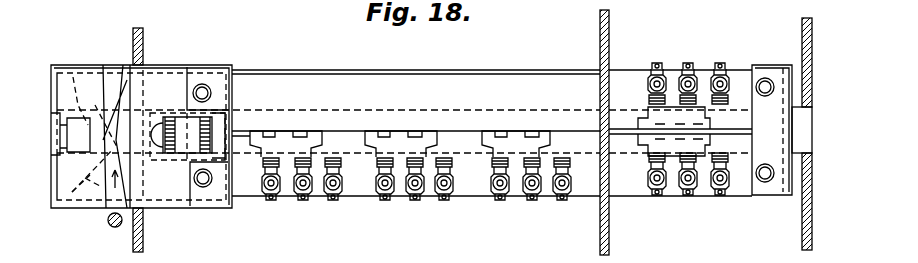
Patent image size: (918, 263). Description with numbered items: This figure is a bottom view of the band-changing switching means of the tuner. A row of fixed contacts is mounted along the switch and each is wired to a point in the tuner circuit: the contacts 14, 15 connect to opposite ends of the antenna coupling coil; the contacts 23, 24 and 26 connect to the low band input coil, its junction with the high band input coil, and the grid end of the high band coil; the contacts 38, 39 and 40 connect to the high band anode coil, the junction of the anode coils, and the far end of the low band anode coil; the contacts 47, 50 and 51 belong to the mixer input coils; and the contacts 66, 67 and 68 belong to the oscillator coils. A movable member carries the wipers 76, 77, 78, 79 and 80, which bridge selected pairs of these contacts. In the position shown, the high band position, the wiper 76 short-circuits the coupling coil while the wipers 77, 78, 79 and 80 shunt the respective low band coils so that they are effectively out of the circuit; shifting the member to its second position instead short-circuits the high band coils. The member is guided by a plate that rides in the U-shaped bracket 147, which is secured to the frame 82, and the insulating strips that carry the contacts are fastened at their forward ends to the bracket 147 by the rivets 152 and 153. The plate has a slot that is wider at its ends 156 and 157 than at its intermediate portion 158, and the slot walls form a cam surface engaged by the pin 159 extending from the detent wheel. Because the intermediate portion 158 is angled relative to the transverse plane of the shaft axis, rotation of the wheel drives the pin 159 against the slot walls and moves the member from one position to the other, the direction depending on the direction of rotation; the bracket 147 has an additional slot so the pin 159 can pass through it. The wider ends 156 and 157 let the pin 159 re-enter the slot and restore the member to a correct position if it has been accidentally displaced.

The contact 14 is at (686, 60).
The contact 15 is at (718, 60).
The contact 23 is at (688, 197).
The contact 24 is at (721, 197).
The contact 26 is at (656, 197).
The contact 38 is at (499, 202).
The contact 39 is at (531, 202).
The contact 40 is at (561, 202).
The contact 47 is at (384, 202).
The contact 50 is at (414, 202).
The contact 51 is at (444, 202).
The contact 66 is at (267, 202).
The contact 67 is at (300, 202).
The contact 68 is at (331, 202).
The wiper 76 is at (690, 119).
The wiper 77 is at (690, 142).
The wiper 78 is at (521, 137).
The wiper 79 is at (407, 138).
The wiper 80 is at (292, 138).
The frame 82 is at (143, 48).
The U-shaped bracket 147 is at (163, 207).
The rivet 152 is at (211, 92).
The rivet 153 is at (211, 180).
The slot end 156 is at (113, 87).
The slot end 157 is at (78, 176).
The intermediate portion of slot 158 is at (77, 135).
The pin 159 is at (108, 222).